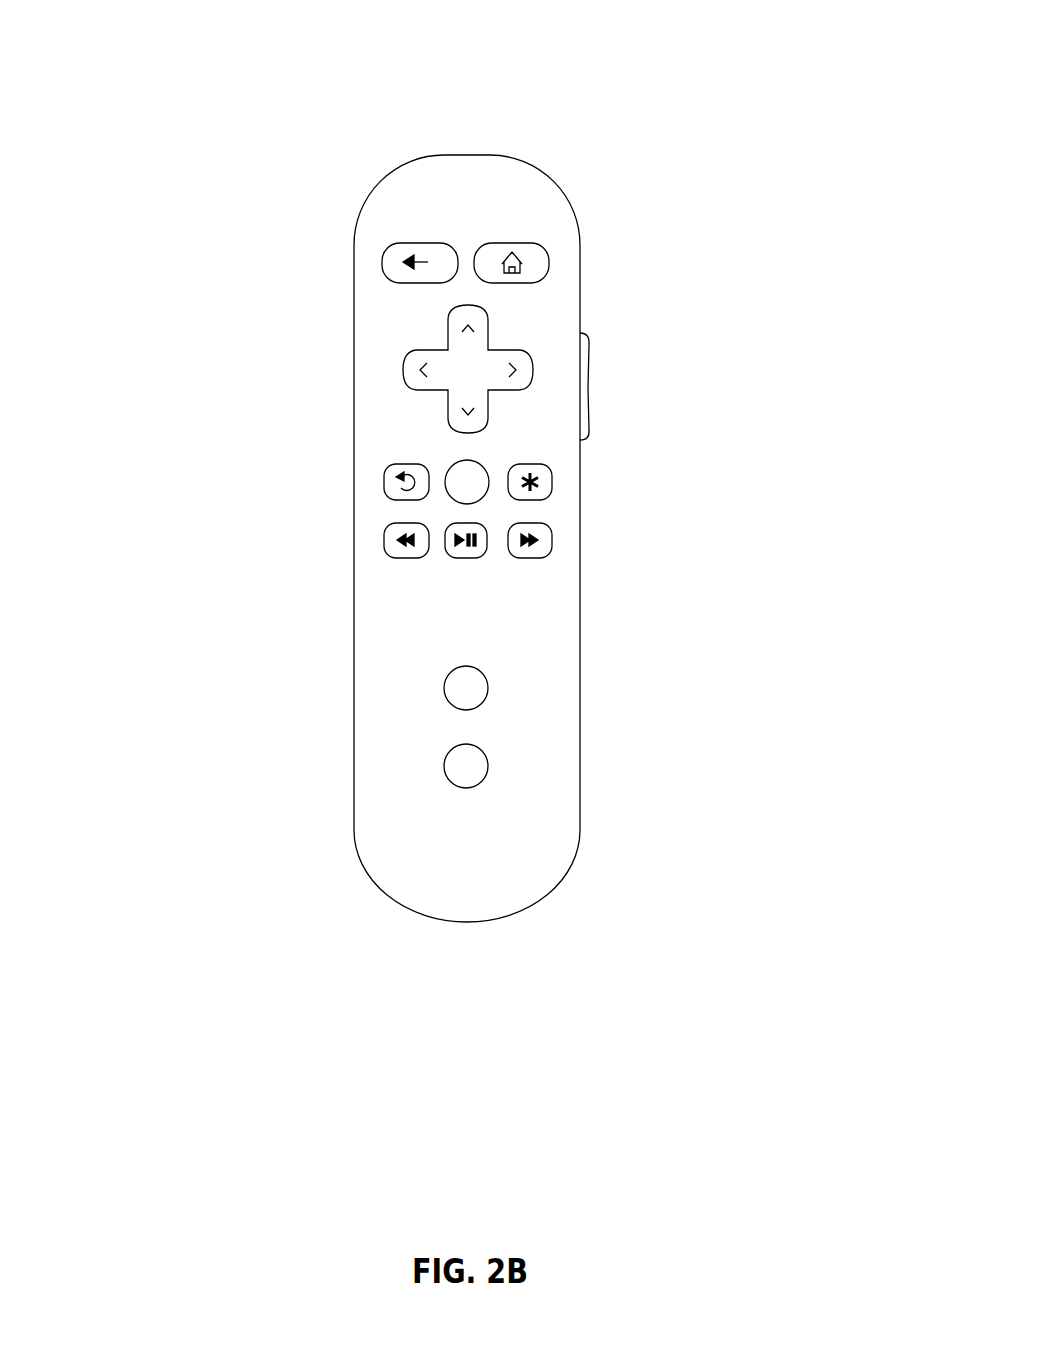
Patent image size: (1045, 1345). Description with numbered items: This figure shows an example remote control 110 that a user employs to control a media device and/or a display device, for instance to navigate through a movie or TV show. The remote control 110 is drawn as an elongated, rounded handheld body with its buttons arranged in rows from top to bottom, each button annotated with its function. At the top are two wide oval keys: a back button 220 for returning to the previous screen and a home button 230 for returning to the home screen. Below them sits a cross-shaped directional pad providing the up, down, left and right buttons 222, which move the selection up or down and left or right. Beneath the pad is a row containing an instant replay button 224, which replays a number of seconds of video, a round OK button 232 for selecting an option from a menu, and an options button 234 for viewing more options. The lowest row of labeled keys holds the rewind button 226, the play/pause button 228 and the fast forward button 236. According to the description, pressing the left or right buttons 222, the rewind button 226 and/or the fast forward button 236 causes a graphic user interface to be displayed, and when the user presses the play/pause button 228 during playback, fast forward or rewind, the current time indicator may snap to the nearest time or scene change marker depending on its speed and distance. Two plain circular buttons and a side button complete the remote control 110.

The remote control 110 is at (99, 51).
The [BACK] button 220 is at (375, 262).
The [Left] or [Right] buttons 222 is at (434, 413).
The [INSTANT REPLAY] button 224 is at (375, 481).
The rewind button 226 is at (375, 540).
The play/pause button 228 is at (462, 572).
The [HOME] button 230 is at (557, 262).
The [OK] button 232 is at (469, 458).
The [OPTIONS] button 234 is at (560, 482).
The fast forward button 236 is at (527, 572).